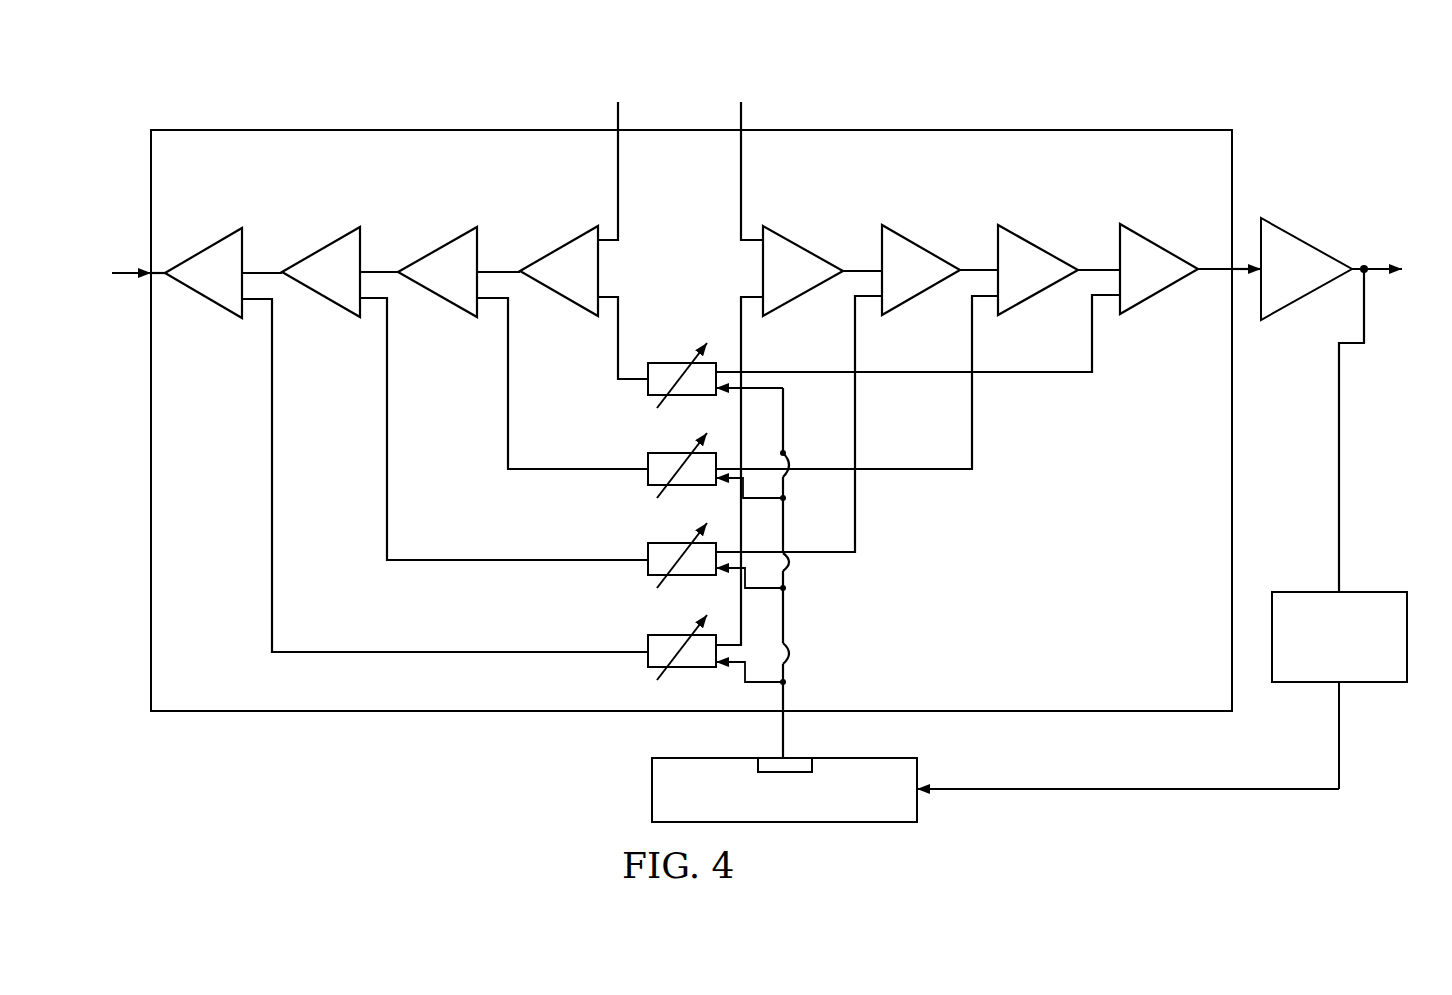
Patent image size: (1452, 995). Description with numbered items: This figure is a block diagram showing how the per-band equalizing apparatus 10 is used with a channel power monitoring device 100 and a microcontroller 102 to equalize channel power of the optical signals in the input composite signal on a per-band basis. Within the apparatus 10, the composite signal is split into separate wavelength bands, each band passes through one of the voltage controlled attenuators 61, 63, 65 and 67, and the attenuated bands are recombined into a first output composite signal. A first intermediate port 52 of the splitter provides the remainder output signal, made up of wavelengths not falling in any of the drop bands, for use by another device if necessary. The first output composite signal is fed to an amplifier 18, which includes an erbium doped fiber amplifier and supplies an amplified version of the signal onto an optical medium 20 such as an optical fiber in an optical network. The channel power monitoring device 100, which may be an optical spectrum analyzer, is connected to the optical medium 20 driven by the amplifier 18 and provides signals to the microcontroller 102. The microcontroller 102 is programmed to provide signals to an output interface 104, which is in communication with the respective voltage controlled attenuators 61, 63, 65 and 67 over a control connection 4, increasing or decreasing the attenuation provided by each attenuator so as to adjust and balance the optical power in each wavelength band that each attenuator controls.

The apparatus for adjusting signal power 10 is at (1008, 78).
The first intermediate port 52 is at (619, 120).
The voltage controlled attenuator 61 is at (658, 634).
The voltage controlled attenuator 63 is at (658, 542).
The voltage controlled attenuator 65 is at (658, 452).
The voltage controlled attenuator 67 is at (658, 362).
The control bus 4 is at (776, 746).
The output interface 104 is at (807, 757).
The microcontroller 102 is at (917, 764).
The amplifier 18 is at (1308, 242).
The optical medium 20 is at (1378, 266).
The channel power monitoring device 100 is at (1352, 592).